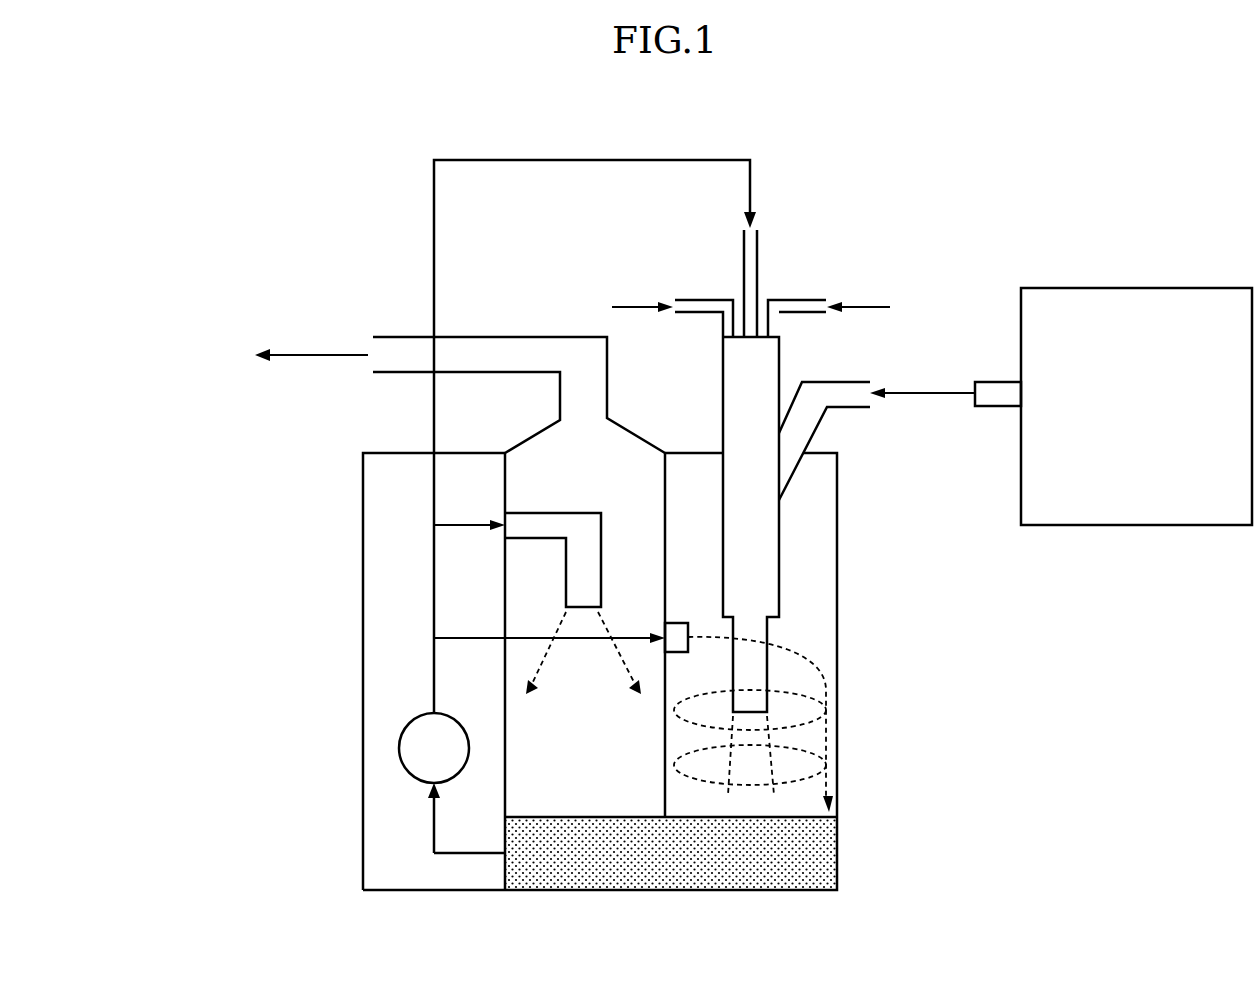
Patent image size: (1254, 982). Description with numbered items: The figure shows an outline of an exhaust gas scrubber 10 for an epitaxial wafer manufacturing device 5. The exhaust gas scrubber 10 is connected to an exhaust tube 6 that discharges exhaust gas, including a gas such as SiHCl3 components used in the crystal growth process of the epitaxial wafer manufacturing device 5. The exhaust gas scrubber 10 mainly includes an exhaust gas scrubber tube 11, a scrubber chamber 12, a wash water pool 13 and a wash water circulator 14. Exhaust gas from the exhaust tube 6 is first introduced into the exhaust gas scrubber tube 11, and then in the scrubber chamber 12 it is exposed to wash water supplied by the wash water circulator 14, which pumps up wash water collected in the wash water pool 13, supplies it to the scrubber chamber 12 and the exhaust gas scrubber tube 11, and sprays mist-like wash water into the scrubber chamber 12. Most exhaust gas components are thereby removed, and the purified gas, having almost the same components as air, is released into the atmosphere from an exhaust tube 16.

The epitaxial wafer manufacturing device 5 is at (1140, 303).
The exhaust tube 6 is at (996, 392).
The exhaust gas scrubber 10 is at (533, 507).
The exhaust gas scrubber tube 11 is at (795, 563).
The scrubber chamber 12 is at (623, 457).
The wash water pool 13 is at (826, 851).
The wash water circulator 14 is at (383, 692).
The exhaust tube 16 is at (391, 346).